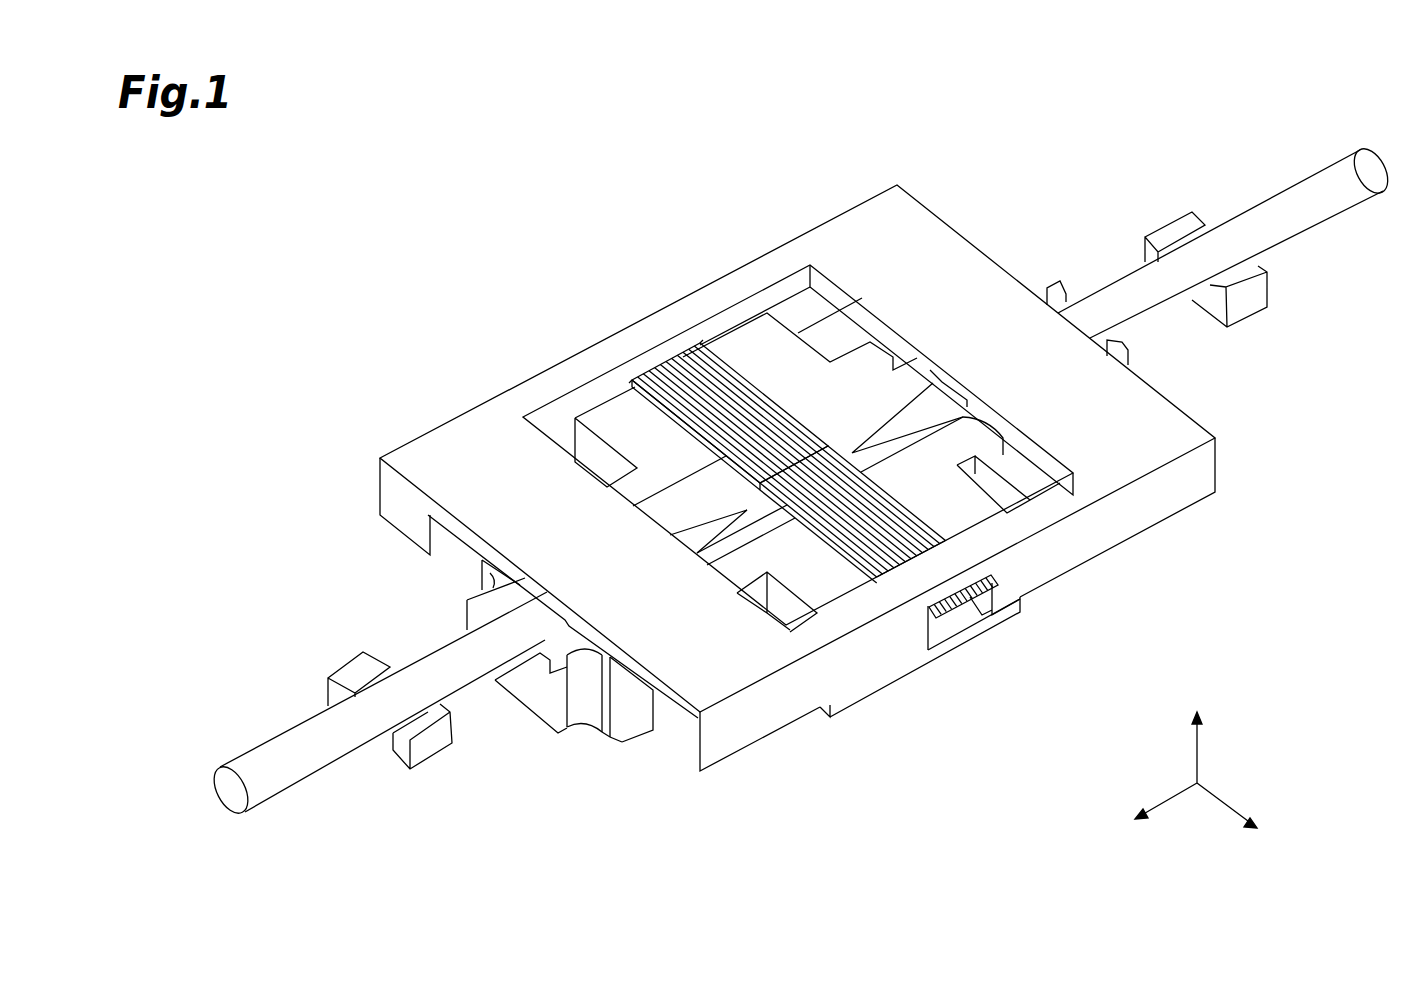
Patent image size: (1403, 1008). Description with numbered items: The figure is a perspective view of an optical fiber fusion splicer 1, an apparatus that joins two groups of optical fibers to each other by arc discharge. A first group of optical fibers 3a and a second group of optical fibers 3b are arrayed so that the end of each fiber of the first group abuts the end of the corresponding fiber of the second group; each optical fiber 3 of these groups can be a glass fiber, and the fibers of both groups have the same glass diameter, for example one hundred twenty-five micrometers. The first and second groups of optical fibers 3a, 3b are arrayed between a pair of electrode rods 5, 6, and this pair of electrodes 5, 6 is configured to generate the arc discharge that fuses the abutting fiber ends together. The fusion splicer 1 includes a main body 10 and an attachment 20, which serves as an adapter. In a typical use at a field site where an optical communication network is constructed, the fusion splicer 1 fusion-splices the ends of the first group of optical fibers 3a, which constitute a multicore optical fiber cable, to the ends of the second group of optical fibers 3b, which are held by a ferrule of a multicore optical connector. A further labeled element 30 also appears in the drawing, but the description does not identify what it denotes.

The optical fiber fusion splicer 1 is at (470, 262).
The attachment 20 is at (938, 214).
The optical fiber 3 is at (903, 425).
The first group of optical fibers 3a is at (681, 370).
The second group of optical fibers 3b is at (907, 535).
The electrode 30 is at (703, 341).
The electrode rod 5 is at (318, 756).
The electrode rod 6 is at (1336, 205).
The main body 10 is at (553, 735).